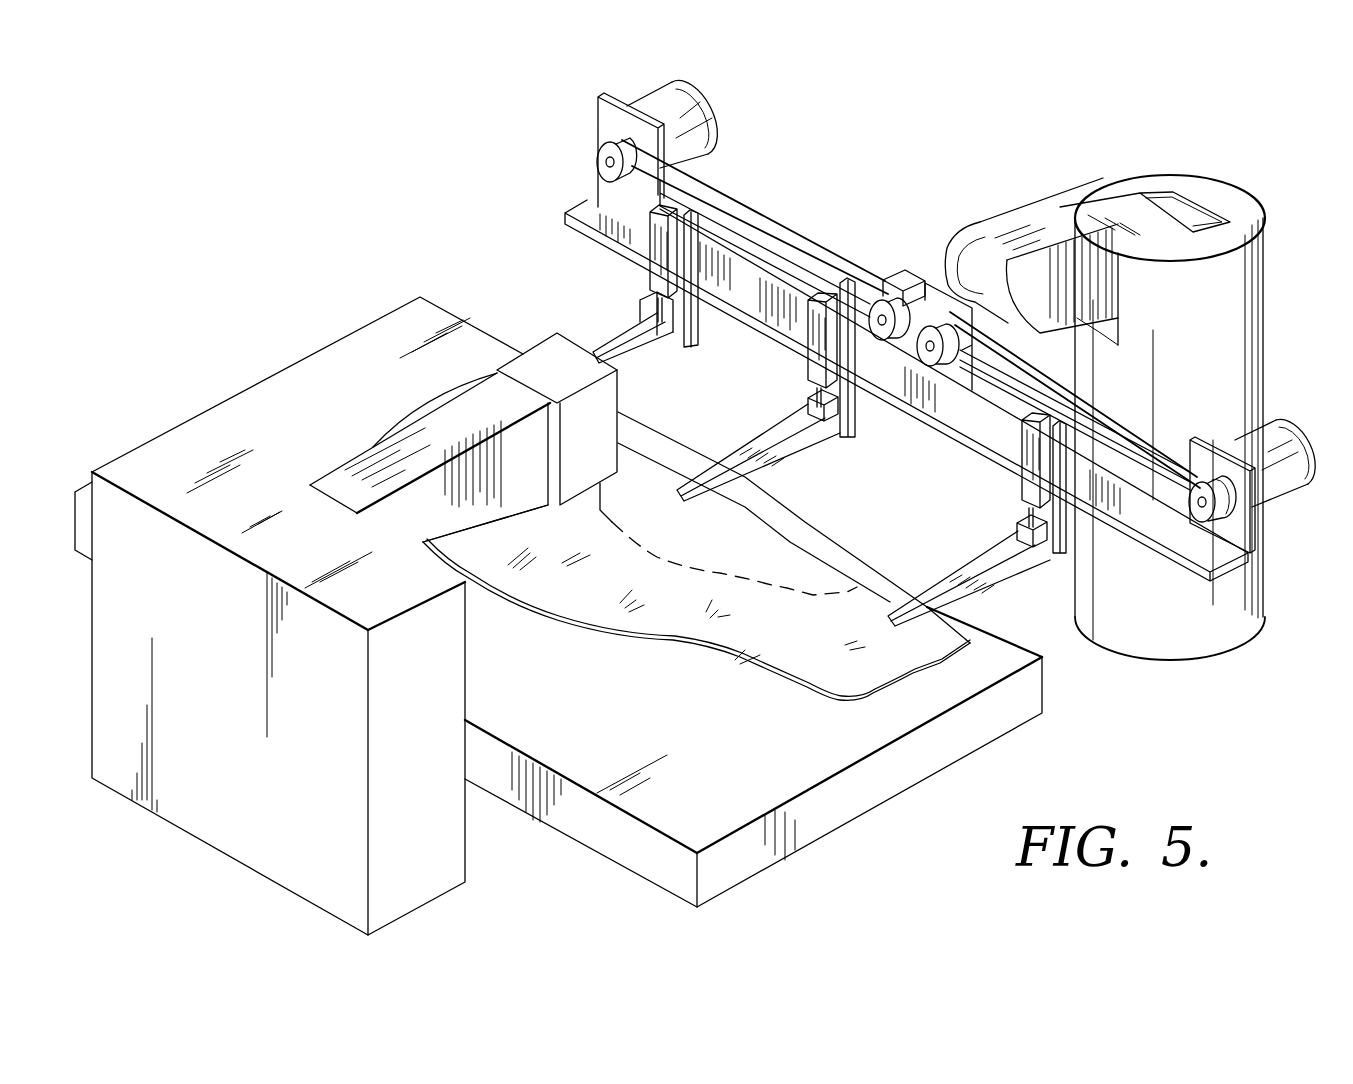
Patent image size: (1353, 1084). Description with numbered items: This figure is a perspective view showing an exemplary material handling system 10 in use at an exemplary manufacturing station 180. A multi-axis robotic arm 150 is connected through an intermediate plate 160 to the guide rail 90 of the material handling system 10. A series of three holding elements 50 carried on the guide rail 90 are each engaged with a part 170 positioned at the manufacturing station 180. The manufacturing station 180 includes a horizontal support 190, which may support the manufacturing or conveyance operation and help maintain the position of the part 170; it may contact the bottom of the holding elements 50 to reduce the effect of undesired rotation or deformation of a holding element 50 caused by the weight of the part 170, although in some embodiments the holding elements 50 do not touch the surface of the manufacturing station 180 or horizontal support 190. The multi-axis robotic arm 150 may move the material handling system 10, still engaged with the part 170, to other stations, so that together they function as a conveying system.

The material handling system 10 is at (789, 216).
The holding element 50 is at (683, 343).
The guide rail 90 is at (1203, 560).
The multi-axis robotic arm 150 is at (1062, 215).
The intermediate plate 160 is at (920, 290).
The part 170 is at (747, 650).
The manufacturing station 180 is at (233, 392).
The horizontal support 190 is at (817, 757).